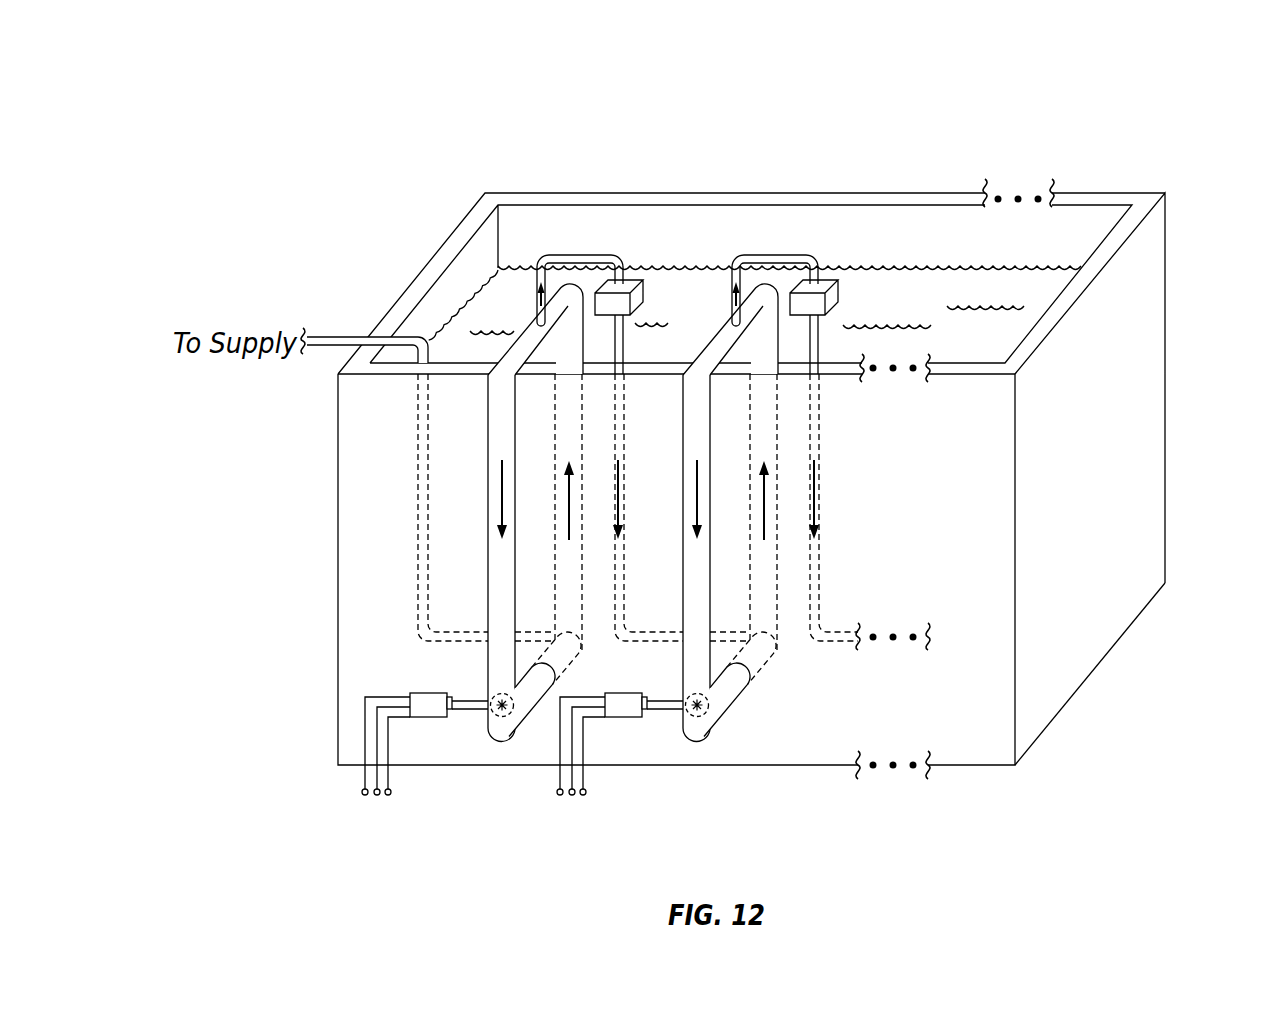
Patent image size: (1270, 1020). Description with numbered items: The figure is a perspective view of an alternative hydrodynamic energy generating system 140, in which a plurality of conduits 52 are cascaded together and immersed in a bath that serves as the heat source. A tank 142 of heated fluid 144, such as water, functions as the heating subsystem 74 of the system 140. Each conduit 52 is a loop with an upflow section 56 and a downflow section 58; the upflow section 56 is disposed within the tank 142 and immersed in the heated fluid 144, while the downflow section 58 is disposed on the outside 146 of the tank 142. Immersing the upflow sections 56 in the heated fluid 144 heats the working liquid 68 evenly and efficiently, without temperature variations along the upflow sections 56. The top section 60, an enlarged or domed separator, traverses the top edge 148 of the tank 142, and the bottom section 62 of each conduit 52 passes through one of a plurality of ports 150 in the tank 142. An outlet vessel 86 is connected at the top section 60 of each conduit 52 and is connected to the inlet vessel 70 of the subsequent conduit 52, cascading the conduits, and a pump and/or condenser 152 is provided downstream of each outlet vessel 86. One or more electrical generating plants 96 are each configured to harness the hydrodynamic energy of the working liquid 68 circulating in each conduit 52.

The conduit 52 is at (517, 322).
The upflow section 56 is at (555, 433).
The downflow section 58 is at (488, 438).
The top section 60 is at (506, 371).
The bottom section 62 is at (497, 743).
The working liquid 68 is at (584, 610).
The vessel 70 is at (416, 558).
The heating subsystem 74 is at (1108, 103).
The outlet vessel 86 is at (588, 253).
The electrical generating plant 96 is at (373, 812).
The hydrodynamic energy generating system 140 is at (1210, 131).
The tank 142 is at (1174, 230).
The heated fluid 144 is at (890, 280).
The outside of the tank 146 is at (1097, 628).
The top edge 148 is at (1110, 200).
The ports 150 is at (548, 680).
The pump and/or condenser 152 is at (632, 280).